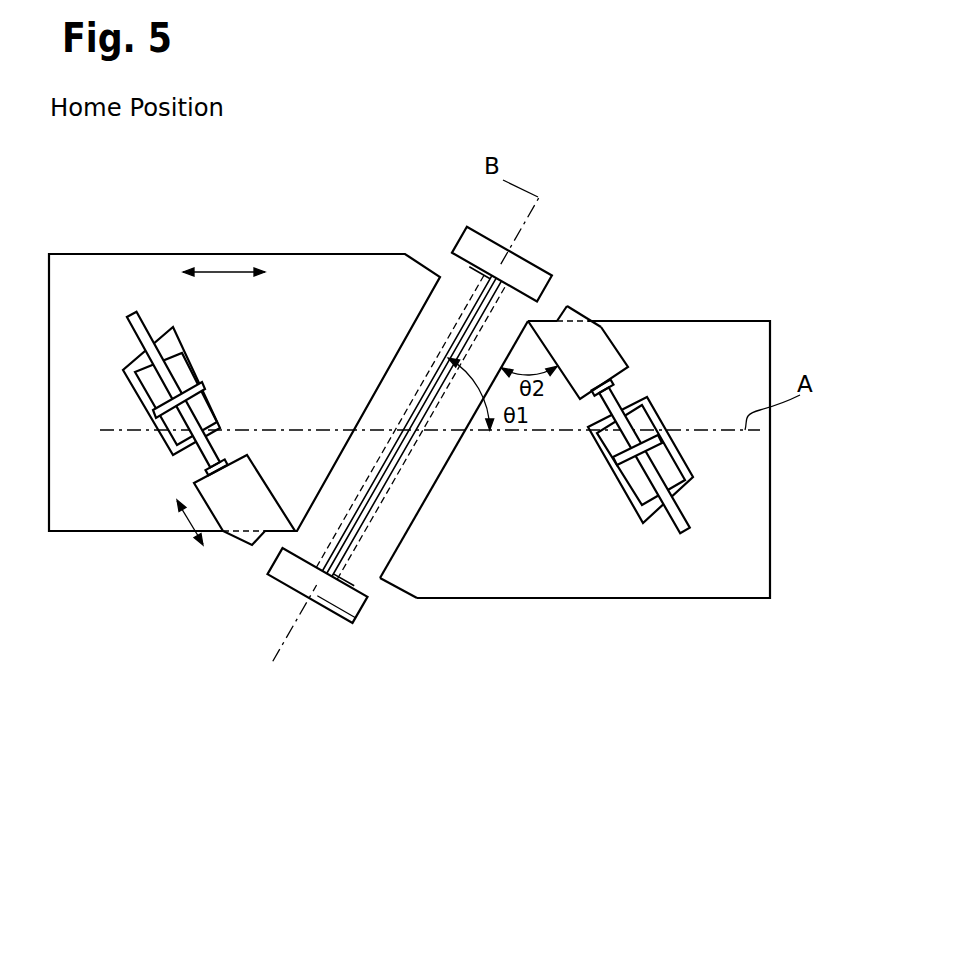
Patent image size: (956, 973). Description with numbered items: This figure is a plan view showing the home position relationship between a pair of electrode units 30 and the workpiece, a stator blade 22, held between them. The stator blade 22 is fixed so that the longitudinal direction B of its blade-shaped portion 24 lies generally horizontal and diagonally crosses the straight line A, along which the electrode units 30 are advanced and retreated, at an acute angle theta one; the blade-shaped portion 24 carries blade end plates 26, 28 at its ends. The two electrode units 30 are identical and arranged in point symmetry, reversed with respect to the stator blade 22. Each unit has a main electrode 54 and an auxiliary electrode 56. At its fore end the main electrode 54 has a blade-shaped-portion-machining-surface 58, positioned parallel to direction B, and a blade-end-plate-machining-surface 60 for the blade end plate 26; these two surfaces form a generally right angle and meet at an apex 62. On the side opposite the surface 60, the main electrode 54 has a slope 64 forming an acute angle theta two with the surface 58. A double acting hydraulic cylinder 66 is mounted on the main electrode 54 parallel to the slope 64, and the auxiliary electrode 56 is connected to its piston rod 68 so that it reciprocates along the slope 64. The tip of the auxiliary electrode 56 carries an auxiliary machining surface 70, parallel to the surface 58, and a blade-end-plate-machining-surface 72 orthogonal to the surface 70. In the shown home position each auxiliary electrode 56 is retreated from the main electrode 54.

The stator blade 22 is at (421, 456).
The blade-shaped portion 24 is at (402, 459).
The blade end plate 26 is at (347, 622).
The blade end plate 28 is at (553, 317).
The electrode unit 30 is at (409, 479).
The main electrode 54 is at (295, 254).
The auxiliary electrode 56 is at (431, 449).
The blade-shaped-portion-machining-surface 58 is at (445, 462).
The blade-end-plate-machining-surface 60 is at (398, 597).
The apex 62 is at (377, 583).
The slope 64 is at (592, 413).
The double acting hydraulic cylinder 66 is at (694, 470).
The piston rod 68 is at (620, 384).
The auxiliary machining surface 70 is at (553, 315).
The blade-end-plate-machining-surface 72 is at (587, 315).